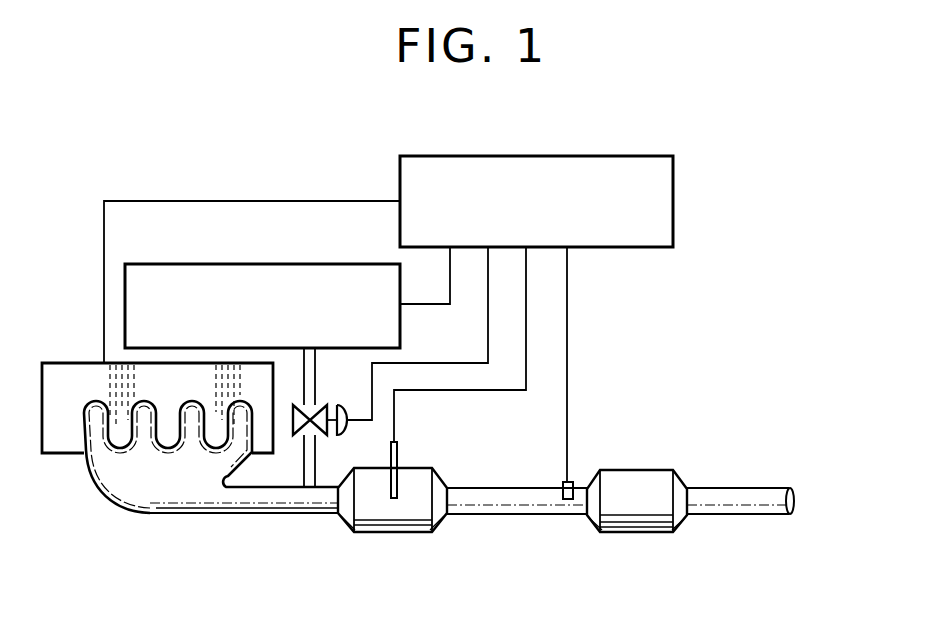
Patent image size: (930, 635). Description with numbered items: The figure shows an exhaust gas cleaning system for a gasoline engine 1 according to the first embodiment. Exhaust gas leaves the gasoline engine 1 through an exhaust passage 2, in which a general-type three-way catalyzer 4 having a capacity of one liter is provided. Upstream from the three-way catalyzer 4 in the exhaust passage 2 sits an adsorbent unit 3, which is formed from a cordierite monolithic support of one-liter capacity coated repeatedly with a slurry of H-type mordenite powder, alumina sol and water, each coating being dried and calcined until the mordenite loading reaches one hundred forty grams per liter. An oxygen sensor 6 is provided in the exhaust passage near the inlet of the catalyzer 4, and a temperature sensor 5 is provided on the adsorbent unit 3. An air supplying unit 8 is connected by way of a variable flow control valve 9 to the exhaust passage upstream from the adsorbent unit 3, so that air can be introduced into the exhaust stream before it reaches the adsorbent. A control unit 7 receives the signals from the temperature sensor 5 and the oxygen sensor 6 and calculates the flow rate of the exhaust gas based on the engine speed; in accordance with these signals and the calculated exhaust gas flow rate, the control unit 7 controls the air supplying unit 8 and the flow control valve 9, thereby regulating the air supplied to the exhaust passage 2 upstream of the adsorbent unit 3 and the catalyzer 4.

The gasoline engine 1 is at (70, 440).
The exhaust passage 2 is at (227, 502).
The adsorbent unit 3 is at (392, 520).
The three-way catalyzer 4 is at (640, 522).
The temperature sensor 5 is at (398, 455).
The oxygen sensor 6 is at (572, 482).
The control unit 7 is at (548, 156).
The air supplying unit 8 is at (308, 264).
The variable flow control valve 9 is at (293, 424).